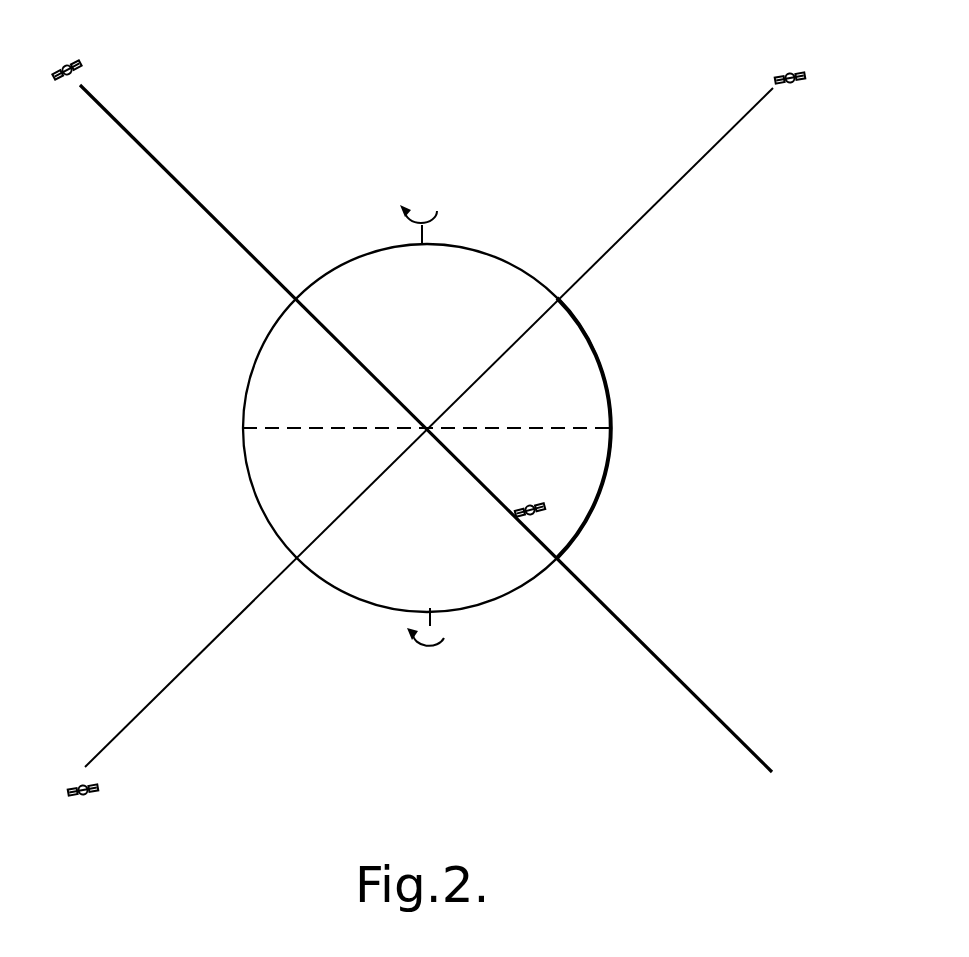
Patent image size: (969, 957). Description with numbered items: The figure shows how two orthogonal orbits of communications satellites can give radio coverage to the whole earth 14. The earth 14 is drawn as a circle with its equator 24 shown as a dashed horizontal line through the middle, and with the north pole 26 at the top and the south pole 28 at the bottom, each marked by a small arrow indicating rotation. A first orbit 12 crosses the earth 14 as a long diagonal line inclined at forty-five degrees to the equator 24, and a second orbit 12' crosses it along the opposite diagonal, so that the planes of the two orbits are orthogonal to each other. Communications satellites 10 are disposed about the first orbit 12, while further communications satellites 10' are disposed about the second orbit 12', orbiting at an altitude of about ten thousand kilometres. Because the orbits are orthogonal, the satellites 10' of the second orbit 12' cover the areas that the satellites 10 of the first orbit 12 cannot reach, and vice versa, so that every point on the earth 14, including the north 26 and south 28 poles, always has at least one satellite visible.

The communications satellite 10 is at (363, 273).
The communications satellite 10' is at (456, 456).
The first orbit 12 is at (426, 428).
The second orbit 12' is at (429, 427).
The earth 14 is at (256, 500).
The equator 24 is at (613, 426).
The north pole 26 is at (427, 241).
The south pole 28 is at (432, 618).